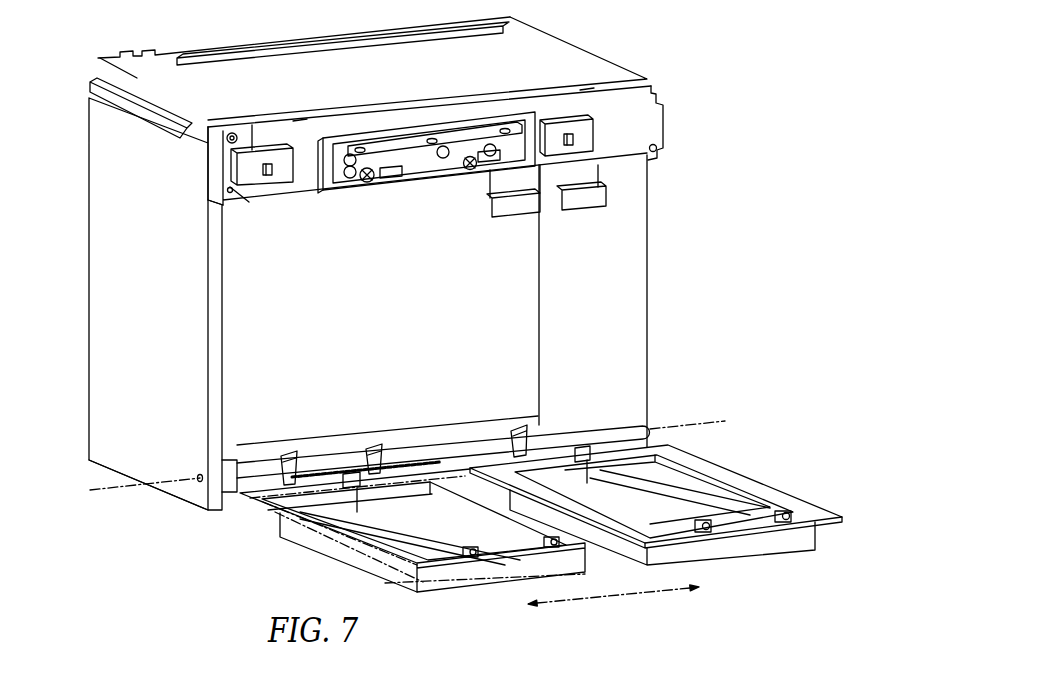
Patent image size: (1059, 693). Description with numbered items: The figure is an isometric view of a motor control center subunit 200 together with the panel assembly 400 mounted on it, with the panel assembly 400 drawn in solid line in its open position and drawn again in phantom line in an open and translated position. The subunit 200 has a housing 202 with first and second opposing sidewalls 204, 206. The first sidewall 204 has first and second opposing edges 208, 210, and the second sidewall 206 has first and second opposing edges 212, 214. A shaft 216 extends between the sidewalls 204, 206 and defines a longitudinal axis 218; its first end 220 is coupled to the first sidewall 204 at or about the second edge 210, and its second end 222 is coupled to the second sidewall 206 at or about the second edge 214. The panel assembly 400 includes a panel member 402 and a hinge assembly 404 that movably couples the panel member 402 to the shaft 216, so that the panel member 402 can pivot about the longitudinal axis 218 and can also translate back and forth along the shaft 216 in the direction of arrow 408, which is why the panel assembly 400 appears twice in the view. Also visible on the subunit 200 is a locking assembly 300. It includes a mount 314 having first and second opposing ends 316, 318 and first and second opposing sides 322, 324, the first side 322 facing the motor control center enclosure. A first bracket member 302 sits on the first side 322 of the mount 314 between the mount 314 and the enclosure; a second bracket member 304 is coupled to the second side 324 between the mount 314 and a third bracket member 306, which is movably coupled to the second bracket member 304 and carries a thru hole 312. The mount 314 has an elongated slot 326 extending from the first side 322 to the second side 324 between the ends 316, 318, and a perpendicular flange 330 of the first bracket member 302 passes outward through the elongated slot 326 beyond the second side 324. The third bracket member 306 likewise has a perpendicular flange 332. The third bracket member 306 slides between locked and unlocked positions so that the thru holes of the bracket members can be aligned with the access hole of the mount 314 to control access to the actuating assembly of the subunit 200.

The motor control center subunit 200 is at (200, 558).
The housing 202 is at (82, 387).
The first sidewall 204 is at (616, 308).
The second sidewall 206 is at (171, 320).
The first edge 208 is at (663, 76).
The second edge 210 is at (82, 74).
The first edge 212 is at (666, 437).
The second edge 214 is at (84, 471).
The shaft 216 is at (424, 457).
The longitudinal axis 218 is at (131, 495).
The first end 220 is at (625, 415).
The second end 222 is at (245, 453).
The locking assembly 300 is at (411, 165).
The first bracket member 302 is at (467, 126).
The second bracket member 304 is at (343, 165).
The third bracket member 306 is at (427, 167).
The thru hole 312 is at (460, 166).
The mount 314 is at (321, 168).
The first end 316 is at (667, 167).
The second end 318 is at (208, 207).
The first side 322 is at (243, 128).
The second side 324 is at (281, 140).
The elongated slot 326 is at (395, 136).
The perpendicular flange 330 is at (370, 147).
The perpendicular flange 332 is at (528, 133).
The panel assembly 400 is at (538, 541).
The panel member 402 is at (312, 537).
The hinge assembly 404 is at (378, 431).
The arrow 408 is at (614, 598).